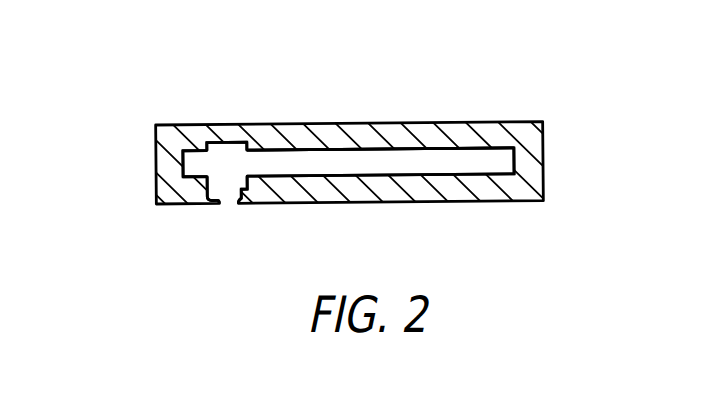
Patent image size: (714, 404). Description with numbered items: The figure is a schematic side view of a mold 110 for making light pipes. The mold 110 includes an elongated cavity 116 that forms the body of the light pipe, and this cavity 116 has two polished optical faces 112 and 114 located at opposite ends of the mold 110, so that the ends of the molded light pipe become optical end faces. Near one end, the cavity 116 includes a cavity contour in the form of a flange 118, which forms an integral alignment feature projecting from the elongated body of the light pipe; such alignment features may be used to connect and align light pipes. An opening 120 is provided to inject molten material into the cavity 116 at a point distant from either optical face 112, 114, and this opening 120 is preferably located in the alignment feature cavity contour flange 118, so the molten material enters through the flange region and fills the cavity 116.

The mold 110 is at (493, 200).
The polished optical face 112 is at (515, 162).
The polished optical face 114 is at (183, 163).
The cavity 116 is at (392, 151).
The flange 118 is at (225, 142).
The opening 120 is at (228, 202).